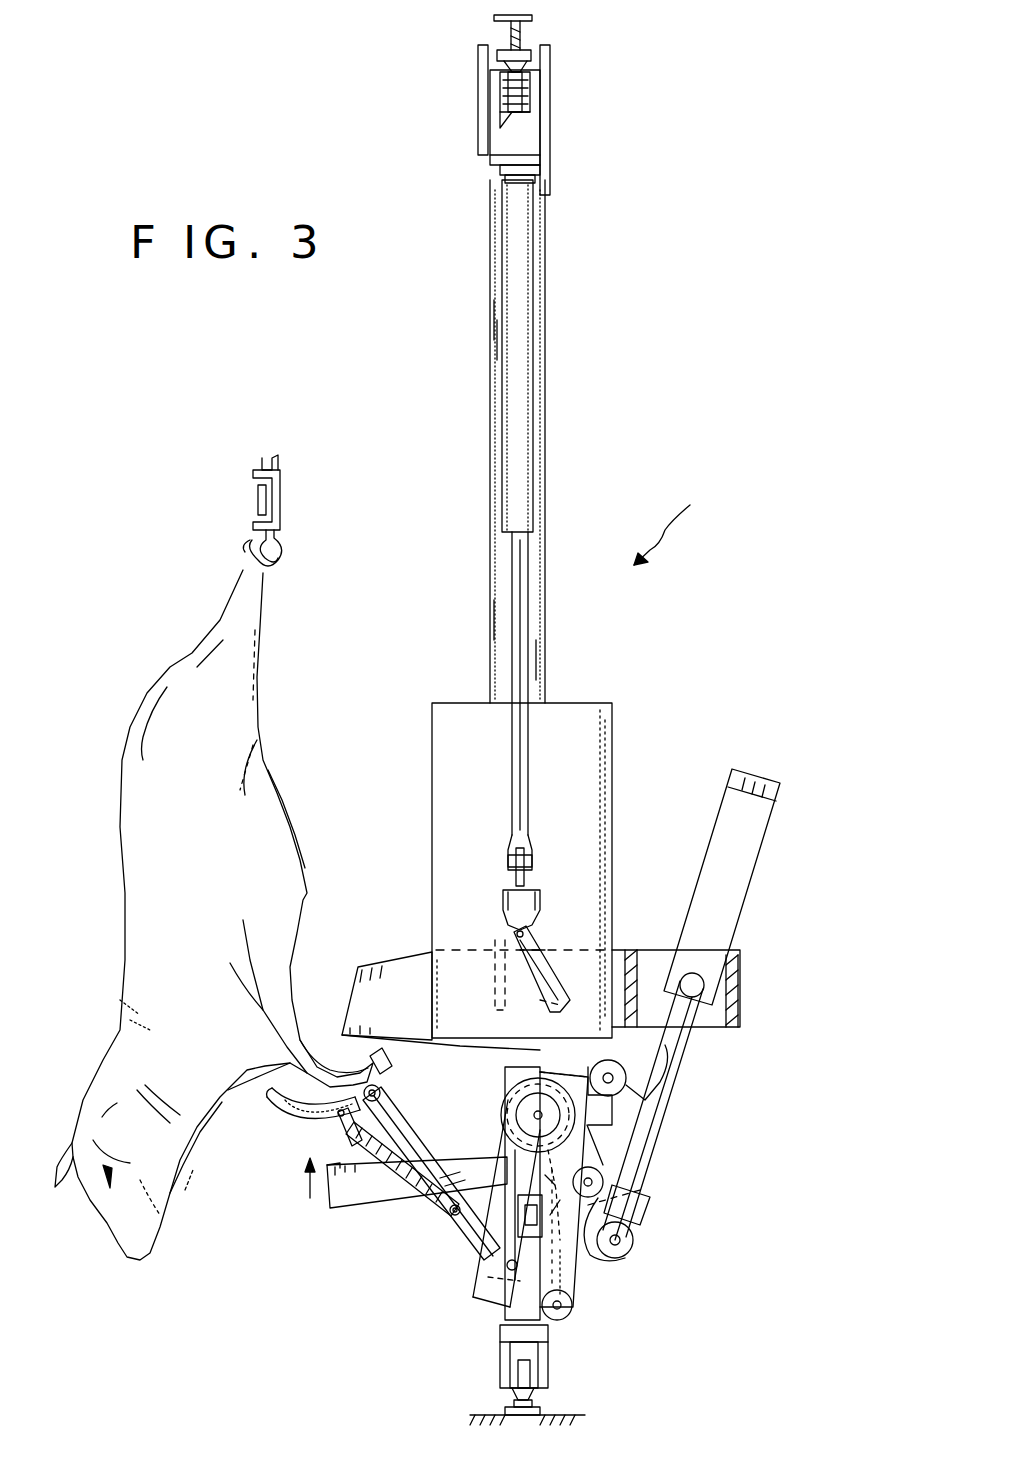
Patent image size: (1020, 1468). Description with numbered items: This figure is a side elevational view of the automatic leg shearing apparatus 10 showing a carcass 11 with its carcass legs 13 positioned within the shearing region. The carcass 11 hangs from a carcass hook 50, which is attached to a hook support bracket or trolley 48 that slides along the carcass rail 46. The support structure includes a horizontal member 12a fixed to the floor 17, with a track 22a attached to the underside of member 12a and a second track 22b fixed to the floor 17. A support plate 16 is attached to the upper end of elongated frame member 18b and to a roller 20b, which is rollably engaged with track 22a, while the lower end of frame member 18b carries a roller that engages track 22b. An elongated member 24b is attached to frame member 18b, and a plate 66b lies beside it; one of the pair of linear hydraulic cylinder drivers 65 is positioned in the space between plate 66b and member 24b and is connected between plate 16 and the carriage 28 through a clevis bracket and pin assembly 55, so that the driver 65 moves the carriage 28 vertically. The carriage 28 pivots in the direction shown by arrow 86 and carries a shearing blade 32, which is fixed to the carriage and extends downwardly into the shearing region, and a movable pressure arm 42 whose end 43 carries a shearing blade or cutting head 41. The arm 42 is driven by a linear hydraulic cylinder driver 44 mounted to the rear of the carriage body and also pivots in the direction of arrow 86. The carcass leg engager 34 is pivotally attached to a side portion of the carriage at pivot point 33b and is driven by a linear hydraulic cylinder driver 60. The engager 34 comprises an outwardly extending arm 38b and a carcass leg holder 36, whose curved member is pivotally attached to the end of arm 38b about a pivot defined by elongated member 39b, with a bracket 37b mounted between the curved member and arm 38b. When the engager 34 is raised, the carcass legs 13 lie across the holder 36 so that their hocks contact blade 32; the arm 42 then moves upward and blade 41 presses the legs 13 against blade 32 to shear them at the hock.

The automatic leg shearing apparatus 10 is at (671, 520).
The carcass 11 is at (128, 890).
The horizontal member 12a is at (524, 34).
The carcass legs 13 is at (382, 1060).
The support plate 16 is at (548, 141).
The floor 17 is at (490, 1412).
The elongated frame member 18b is at (500, 1310).
The roller 20b is at (505, 112).
The track 22a is at (520, 66).
The track 22b is at (538, 1404).
The elongated member 24b is at (540, 262).
The carriage 28 is at (408, 963).
The shearing blade 32 is at (352, 1063).
The pivot point 33b is at (574, 1304).
The carcass leg engager 34 is at (418, 1111).
The carcass leg holder 36 is at (280, 1110).
The bracket 37b is at (335, 1135).
The arm 38b is at (404, 1142).
The elongated member 39b is at (378, 1089).
The shearing blade 41 is at (386, 1172).
The pressure arm 42 is at (356, 1200).
The end 43 is at (340, 1176).
The driver 44 is at (738, 872).
The carcass rail 46 is at (258, 500).
The hook support bracket or trolley 48 is at (283, 476).
The carcass hook 50 is at (285, 548).
The clevis bracket and pin assembly 55 is at (540, 930).
The driver 60 is at (628, 1225).
The driver 65 is at (512, 336).
The plate 66b is at (580, 717).
The arrow 86 is at (305, 1186).